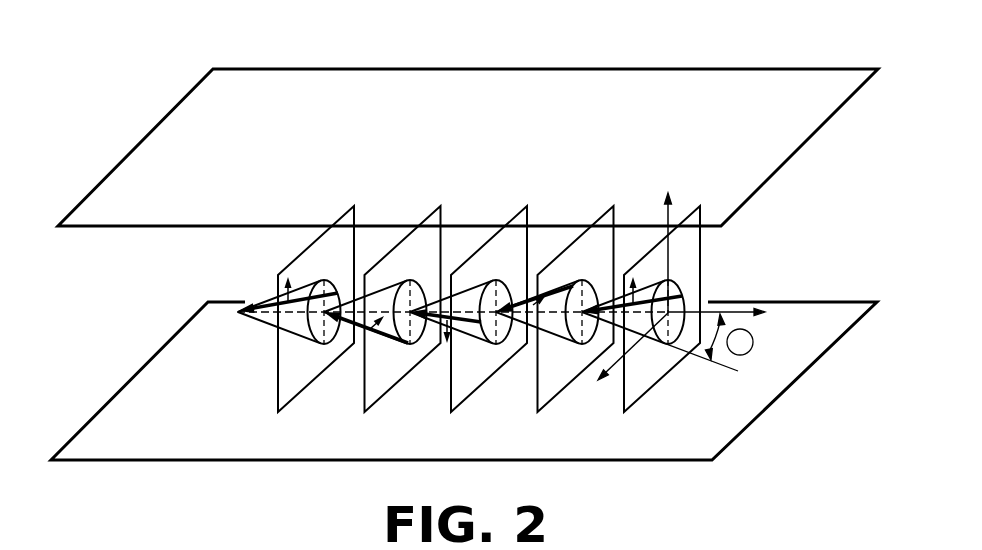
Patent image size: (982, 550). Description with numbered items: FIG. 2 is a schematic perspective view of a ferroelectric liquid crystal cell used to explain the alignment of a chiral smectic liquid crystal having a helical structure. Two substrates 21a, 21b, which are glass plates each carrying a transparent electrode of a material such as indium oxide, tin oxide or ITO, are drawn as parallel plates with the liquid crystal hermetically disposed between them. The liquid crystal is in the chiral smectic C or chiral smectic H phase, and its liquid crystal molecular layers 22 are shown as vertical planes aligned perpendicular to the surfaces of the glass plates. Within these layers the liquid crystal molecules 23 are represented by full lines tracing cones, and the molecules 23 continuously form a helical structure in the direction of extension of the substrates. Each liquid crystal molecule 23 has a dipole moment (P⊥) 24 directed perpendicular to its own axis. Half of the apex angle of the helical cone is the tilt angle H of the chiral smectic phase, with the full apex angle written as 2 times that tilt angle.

The substrate 21a is at (769, 92).
The substrate 21b is at (758, 402).
The liquid crystal molecular layers 22 is at (691, 266).
The liquid crystal molecules 23 is at (258, 316).
The dipole moment (P⊥) 24 is at (288, 277).
The full cone angle 2θH 2 is at (363, 347).